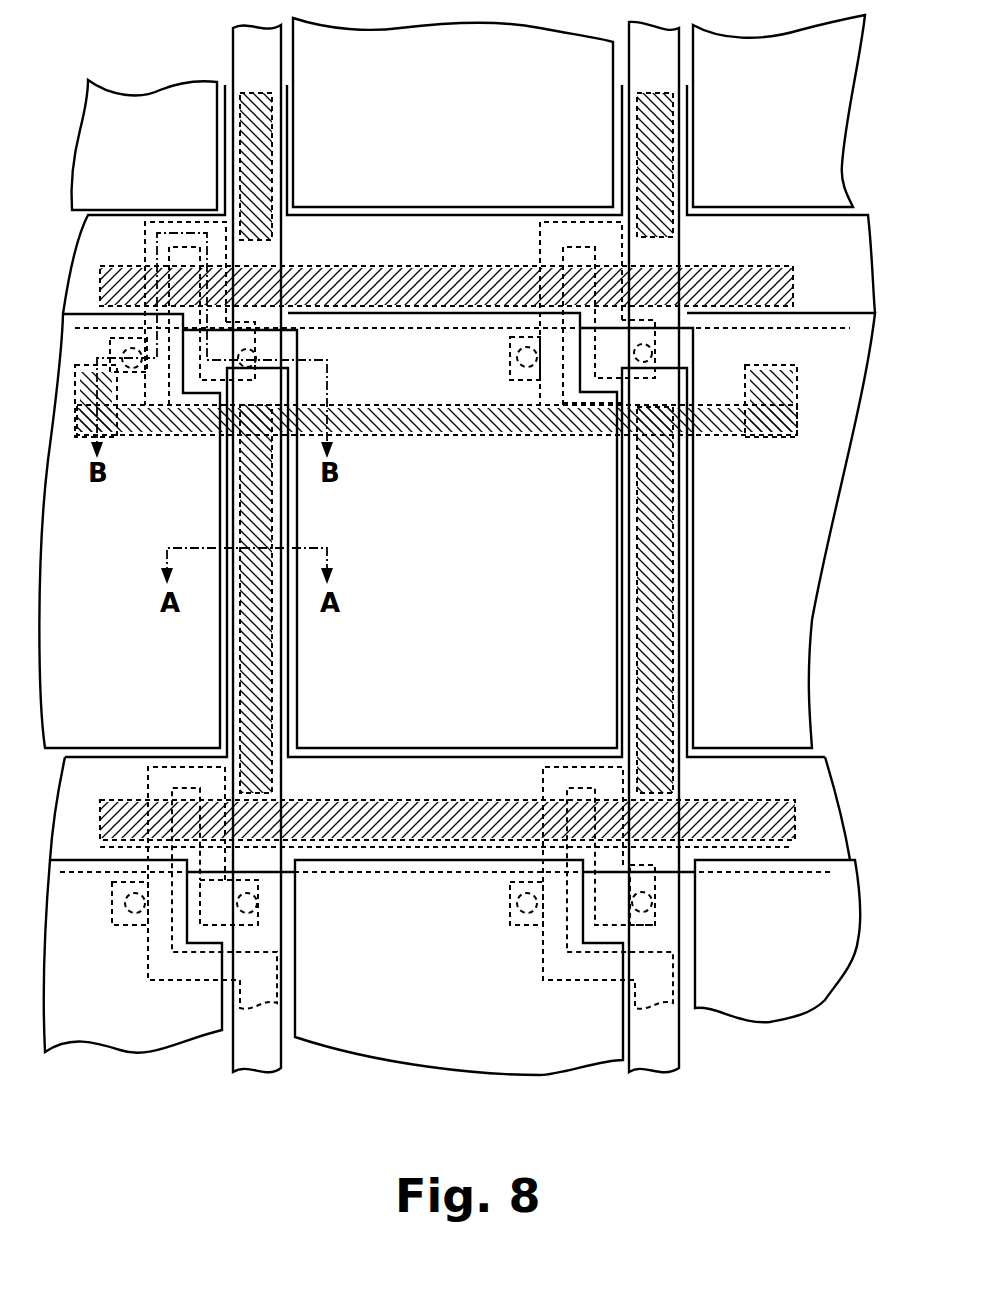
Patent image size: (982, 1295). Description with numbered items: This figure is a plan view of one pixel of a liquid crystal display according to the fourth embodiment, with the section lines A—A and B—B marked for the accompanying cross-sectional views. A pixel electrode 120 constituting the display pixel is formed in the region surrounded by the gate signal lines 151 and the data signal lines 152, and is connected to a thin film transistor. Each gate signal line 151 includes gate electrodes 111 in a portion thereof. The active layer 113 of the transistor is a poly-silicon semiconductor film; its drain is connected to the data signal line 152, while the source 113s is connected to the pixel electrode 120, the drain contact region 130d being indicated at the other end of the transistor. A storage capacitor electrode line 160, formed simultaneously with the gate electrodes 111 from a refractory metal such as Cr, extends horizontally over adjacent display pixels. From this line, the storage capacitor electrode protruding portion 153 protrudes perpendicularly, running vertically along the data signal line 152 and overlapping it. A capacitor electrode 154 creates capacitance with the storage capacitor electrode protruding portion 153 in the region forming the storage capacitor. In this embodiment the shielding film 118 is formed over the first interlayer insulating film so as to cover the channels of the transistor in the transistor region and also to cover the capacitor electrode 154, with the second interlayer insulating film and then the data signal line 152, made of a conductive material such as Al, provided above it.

The gate electrode 111 is at (150, 287).
The active layer 113 is at (565, 230).
The source 113s is at (527, 368).
The shielding film 118 is at (788, 225).
The pixel electrode 120 is at (585, 577).
The drain contact 130d is at (645, 352).
The gate signal line 151 is at (790, 280).
The data signal line 152 is at (283, 240).
The storage capacitor electrode protruding portion 153 is at (257, 660).
The capacitor electrode 154 is at (290, 500).
The storage capacitor electrode line 160 is at (387, 418).